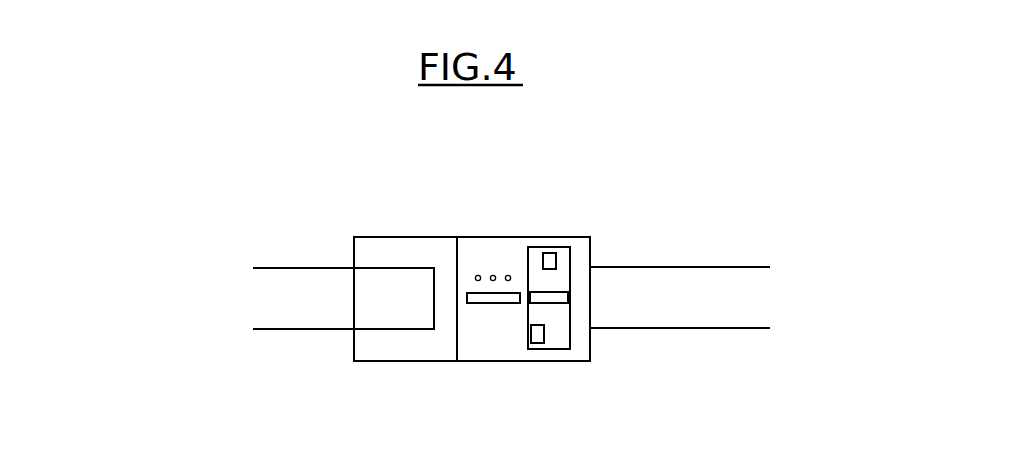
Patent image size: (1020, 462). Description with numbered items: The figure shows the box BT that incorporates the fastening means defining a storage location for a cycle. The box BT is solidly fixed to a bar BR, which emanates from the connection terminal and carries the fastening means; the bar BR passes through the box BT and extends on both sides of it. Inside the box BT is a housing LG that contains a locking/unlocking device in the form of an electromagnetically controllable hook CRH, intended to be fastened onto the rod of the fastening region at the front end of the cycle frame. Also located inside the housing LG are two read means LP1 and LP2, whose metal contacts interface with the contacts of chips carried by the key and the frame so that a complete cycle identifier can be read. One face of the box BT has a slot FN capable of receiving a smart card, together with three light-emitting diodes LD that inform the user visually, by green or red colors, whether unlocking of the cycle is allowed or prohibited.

The box BT is at (450, 208).
The bar BR is at (647, 297).
The light-emitting diodes LD is at (508, 275).
The slot FN is at (492, 303).
The housing LG is at (557, 336).
The electromagnetically controllable hook CRH is at (553, 300).
The read means LP1 is at (548, 258).
The read means LP2 is at (538, 338).